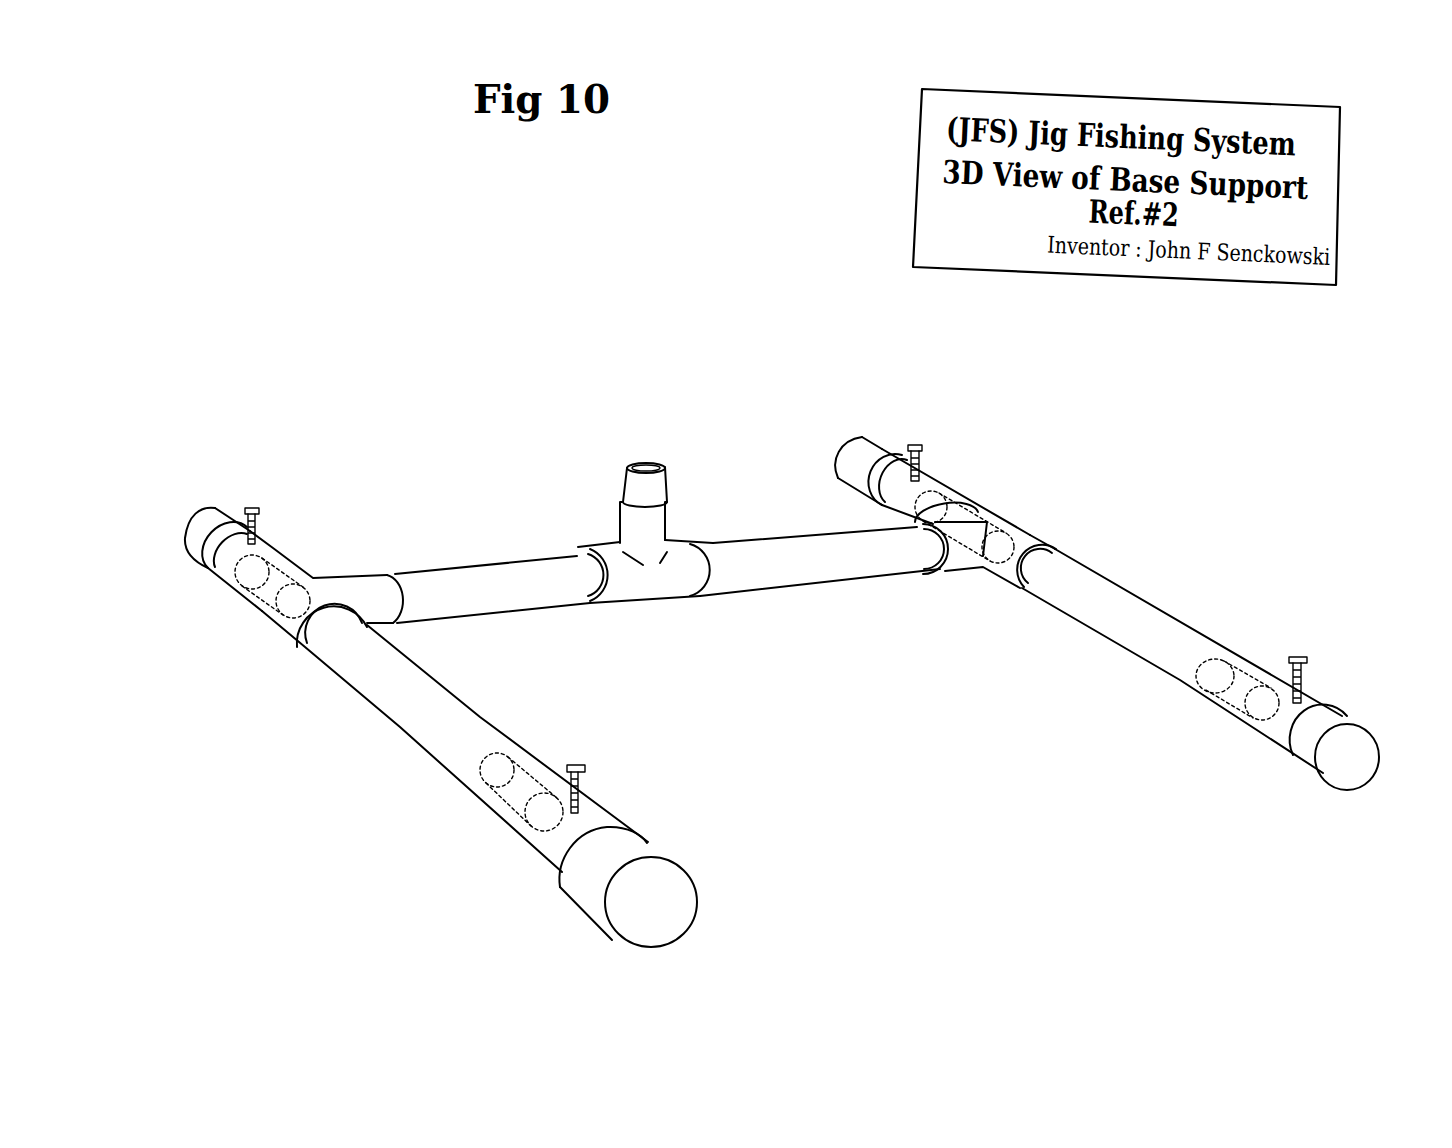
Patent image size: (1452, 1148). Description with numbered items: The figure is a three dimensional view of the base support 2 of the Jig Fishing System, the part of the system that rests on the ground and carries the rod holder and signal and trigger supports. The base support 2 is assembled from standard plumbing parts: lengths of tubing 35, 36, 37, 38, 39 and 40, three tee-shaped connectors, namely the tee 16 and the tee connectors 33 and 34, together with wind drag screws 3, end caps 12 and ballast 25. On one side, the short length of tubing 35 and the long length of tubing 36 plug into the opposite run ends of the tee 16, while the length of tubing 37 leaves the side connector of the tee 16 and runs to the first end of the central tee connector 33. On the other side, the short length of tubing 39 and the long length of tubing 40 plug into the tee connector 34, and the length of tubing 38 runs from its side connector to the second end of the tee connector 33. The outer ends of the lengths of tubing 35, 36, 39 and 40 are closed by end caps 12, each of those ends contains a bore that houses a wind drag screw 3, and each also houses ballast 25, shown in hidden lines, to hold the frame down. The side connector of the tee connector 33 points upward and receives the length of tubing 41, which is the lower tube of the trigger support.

The base support 2 is at (553, 385).
The wind drag screws 3 is at (250, 510).
The end cap 12 is at (213, 522).
The tee 16 is at (358, 585).
The ballast 25 is at (273, 580).
The tee connector 33 is at (657, 577).
The tee connector 34 is at (1027, 527).
The length of tubing 35 is at (223, 567).
The length of tubing 36 is at (435, 707).
The length of tubing 37 is at (493, 597).
The length of tubing 38 is at (798, 563).
The length of tubing 39 is at (930, 502).
The length of tubing 40 is at (1132, 612).
The length of tubing 41 is at (653, 490).